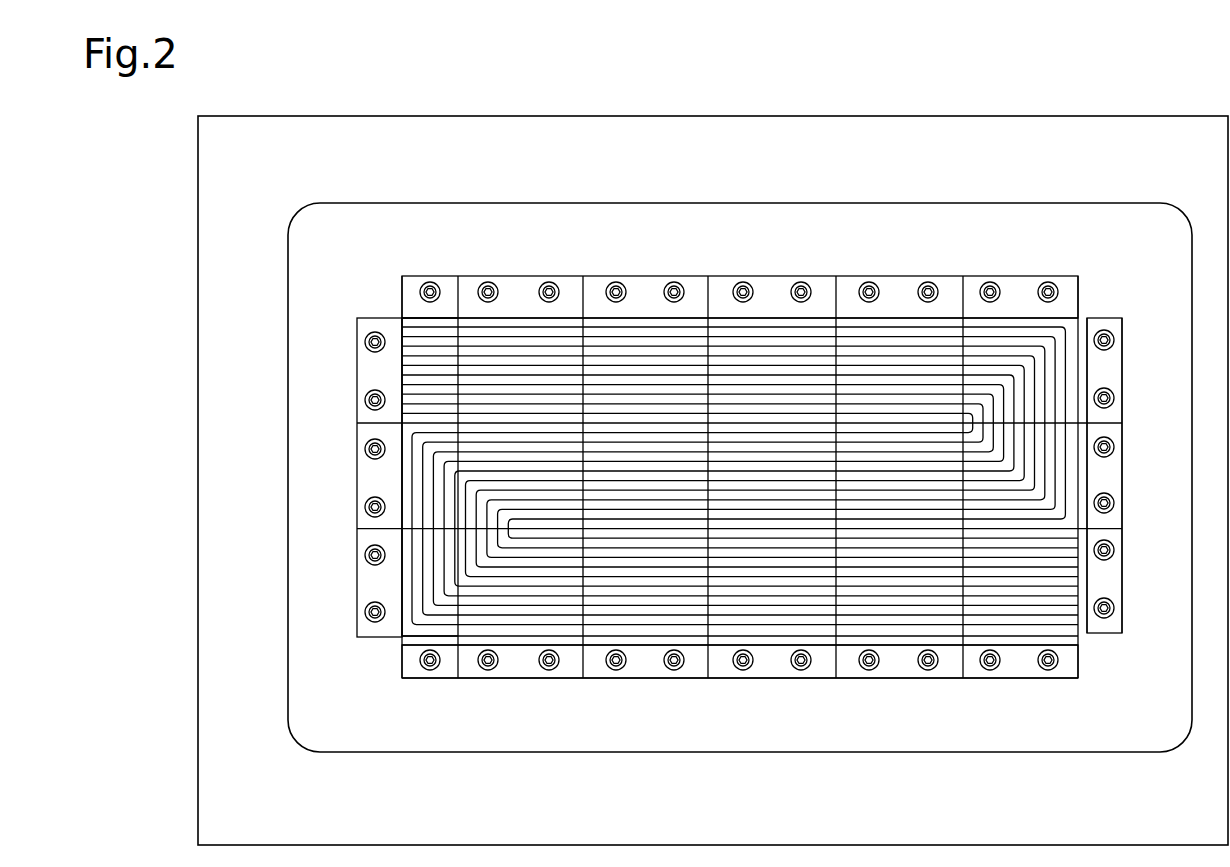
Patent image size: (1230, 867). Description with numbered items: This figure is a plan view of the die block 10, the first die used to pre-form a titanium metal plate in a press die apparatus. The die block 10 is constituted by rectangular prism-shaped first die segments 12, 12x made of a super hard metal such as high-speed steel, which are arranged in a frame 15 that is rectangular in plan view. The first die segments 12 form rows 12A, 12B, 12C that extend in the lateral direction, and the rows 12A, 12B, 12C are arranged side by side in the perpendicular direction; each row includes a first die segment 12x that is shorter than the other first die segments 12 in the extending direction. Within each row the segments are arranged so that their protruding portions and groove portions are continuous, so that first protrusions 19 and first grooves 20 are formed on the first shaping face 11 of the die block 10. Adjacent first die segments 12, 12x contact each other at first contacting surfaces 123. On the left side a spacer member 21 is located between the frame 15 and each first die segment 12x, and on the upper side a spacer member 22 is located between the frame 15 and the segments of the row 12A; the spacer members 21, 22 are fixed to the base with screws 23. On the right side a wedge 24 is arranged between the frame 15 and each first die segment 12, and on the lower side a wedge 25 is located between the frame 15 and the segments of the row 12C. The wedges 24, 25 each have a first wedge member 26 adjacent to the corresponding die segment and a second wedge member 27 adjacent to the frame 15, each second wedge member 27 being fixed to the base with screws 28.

The die block 10 is at (416, 318).
The first shaping face 11 is at (740, 477).
The first die segment 12 is at (712, 474).
The first die segment 12x is at (447, 318).
The row 12A is at (402, 371).
The row 12B is at (402, 478).
The row 12C is at (402, 585).
The frame 15 is at (724, 116).
The first protrusion 19 is at (509, 330).
The first groove 20 is at (570, 330).
The spacer member 21 is at (357, 507).
The spacer member 22 is at (418, 284).
The screw 23 is at (800, 276).
The wedge 24 is at (1178, 276).
The wedge 25 is at (522, 665).
The first wedge member 26 is at (1090, 316).
The second wedge member 27 is at (1112, 318).
The screw 28 is at (1122, 398).
The first contacting surface 123 is at (740, 479).